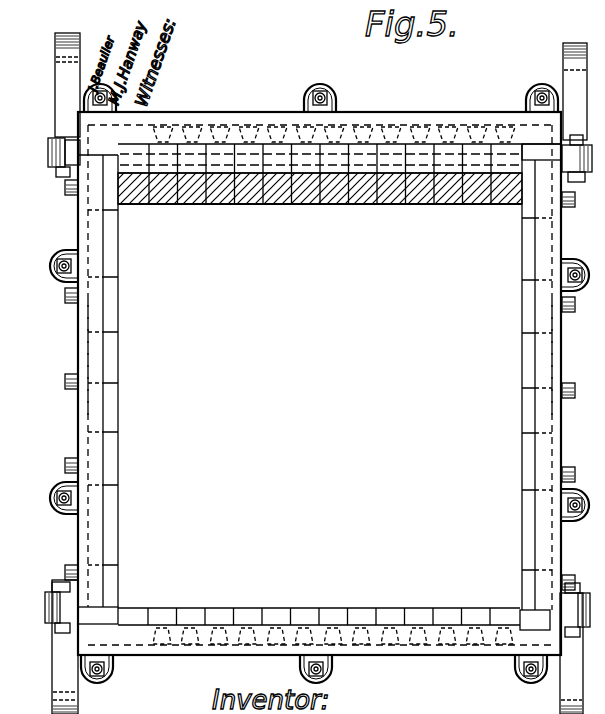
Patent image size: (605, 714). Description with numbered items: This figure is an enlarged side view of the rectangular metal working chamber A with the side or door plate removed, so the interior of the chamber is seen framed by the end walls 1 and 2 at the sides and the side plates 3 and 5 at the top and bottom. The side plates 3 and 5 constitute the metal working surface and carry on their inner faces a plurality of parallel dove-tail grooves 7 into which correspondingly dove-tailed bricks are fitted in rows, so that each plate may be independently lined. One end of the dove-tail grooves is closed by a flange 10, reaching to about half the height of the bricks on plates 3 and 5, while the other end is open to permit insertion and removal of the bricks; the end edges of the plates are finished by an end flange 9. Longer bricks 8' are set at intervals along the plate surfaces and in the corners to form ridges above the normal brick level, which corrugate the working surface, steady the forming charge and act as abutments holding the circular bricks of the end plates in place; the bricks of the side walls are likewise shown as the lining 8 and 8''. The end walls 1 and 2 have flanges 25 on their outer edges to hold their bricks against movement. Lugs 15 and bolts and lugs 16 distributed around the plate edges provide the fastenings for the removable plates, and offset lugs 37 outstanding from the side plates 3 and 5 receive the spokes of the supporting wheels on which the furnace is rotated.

The end wall 1 is at (78, 402).
The end wall 2 is at (553, 421).
The side plate 3 is at (393, 118).
The side plate 5 is at (392, 656).
The dove-tail grooves 7 is at (235, 126).
The bars 8 is at (319, 434).
The longer bricks 8' is at (320, 203).
The lower bar section 8'' is at (234, 591).
The end flange 9 is at (82, 143).
The flange 10 is at (293, 133).
The lugs 15 is at (62, 506).
The bolts and lugs 16 is at (332, 100).
The flanges 25 is at (102, 360).
The offset lugs 37 is at (67, 675).
The metal working chamber A is at (462, 392).